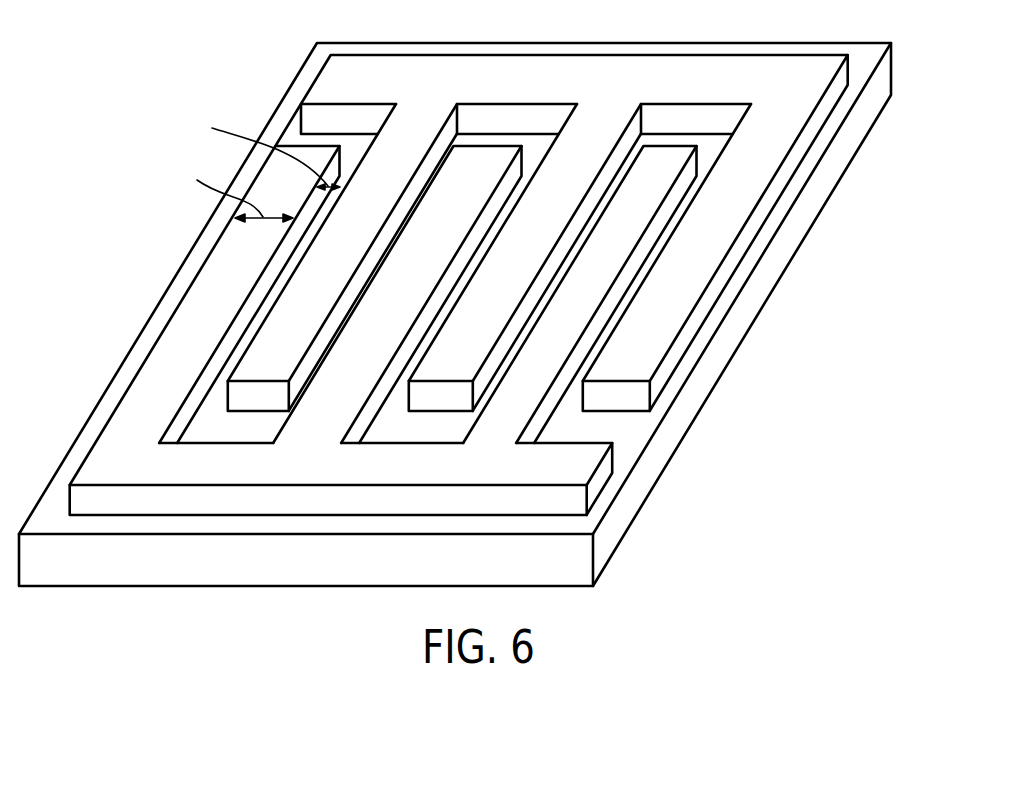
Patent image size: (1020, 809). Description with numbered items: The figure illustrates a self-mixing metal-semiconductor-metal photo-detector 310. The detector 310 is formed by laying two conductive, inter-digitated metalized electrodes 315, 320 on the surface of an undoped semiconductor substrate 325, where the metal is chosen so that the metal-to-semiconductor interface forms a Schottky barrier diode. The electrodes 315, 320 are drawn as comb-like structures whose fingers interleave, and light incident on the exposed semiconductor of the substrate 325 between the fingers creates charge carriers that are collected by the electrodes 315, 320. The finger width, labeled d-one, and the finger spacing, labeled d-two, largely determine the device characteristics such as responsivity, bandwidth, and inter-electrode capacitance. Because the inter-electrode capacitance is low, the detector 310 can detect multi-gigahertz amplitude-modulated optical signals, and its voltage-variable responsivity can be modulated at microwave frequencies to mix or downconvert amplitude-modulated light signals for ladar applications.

The metal-semiconductor-metal detector 310 is at (456, 314).
The inter-digitated electrode 315 is at (681, 343).
The inter-digitated electrode 320 is at (459, 285).
The undoped semiconductor substrate 325 is at (613, 520).